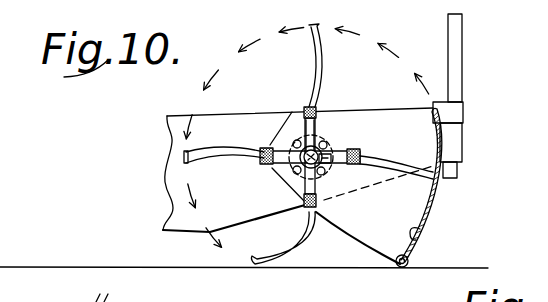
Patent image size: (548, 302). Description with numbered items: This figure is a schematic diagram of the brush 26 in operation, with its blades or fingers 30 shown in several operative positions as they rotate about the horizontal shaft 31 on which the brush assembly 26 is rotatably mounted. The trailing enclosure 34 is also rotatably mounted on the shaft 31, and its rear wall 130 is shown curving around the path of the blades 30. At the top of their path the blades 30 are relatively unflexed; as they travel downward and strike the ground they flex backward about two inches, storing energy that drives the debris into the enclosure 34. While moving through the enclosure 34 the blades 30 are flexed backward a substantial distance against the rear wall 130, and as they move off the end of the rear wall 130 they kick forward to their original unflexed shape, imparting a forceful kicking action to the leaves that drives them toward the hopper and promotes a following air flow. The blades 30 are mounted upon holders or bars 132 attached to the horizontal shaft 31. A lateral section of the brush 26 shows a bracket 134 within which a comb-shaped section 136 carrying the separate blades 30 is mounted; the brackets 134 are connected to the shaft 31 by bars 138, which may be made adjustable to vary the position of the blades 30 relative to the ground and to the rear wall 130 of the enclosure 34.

The brush assembly 26 is at (176, 171).
The blades or fingers 30 is at (314, 56).
The horizontal shaft 31 is at (295, 146).
The trailing enclosure 34 is at (439, 203).
The rear wall 130 is at (418, 232).
The holders or bars 132 is at (315, 124).
The bracket 134 is at (357, 151).
The comb-shaped section 136 is at (367, 166).
The bars 138 is at (278, 168).